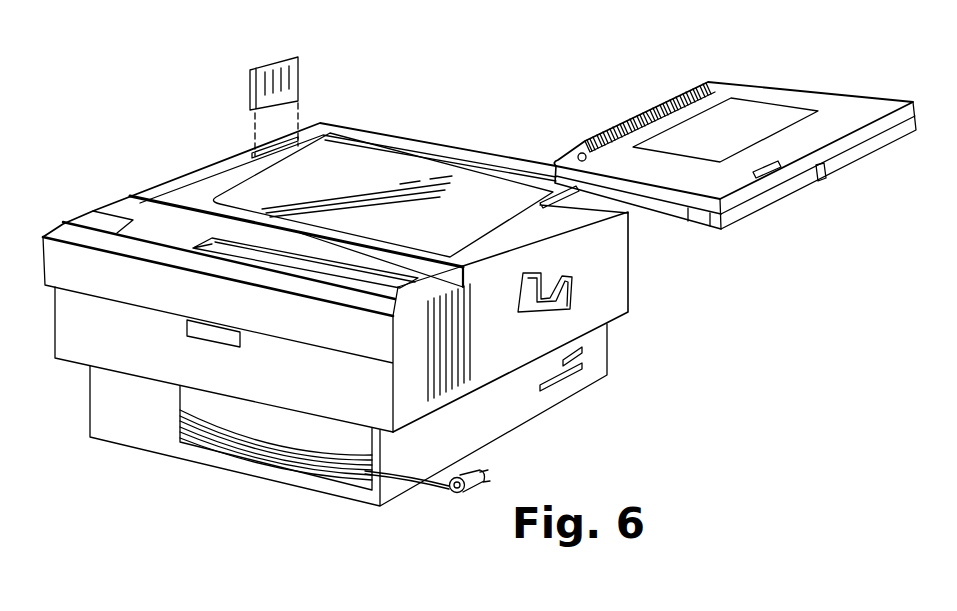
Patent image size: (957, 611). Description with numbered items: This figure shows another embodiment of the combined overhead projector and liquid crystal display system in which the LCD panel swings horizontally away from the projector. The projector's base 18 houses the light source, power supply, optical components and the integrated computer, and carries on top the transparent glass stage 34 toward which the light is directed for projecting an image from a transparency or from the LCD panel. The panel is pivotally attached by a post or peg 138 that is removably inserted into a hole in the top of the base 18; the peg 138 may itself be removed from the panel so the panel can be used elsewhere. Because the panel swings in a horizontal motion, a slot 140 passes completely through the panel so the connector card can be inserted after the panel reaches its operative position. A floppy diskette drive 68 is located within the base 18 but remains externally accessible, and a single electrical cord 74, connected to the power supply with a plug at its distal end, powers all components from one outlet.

The base 18 is at (605, 250).
The stage 34 is at (418, 176).
The floppy diskette drive 68 is at (558, 382).
The electrical cord 74 is at (470, 492).
The peg 138 is at (579, 153).
The slot 140 is at (778, 170).